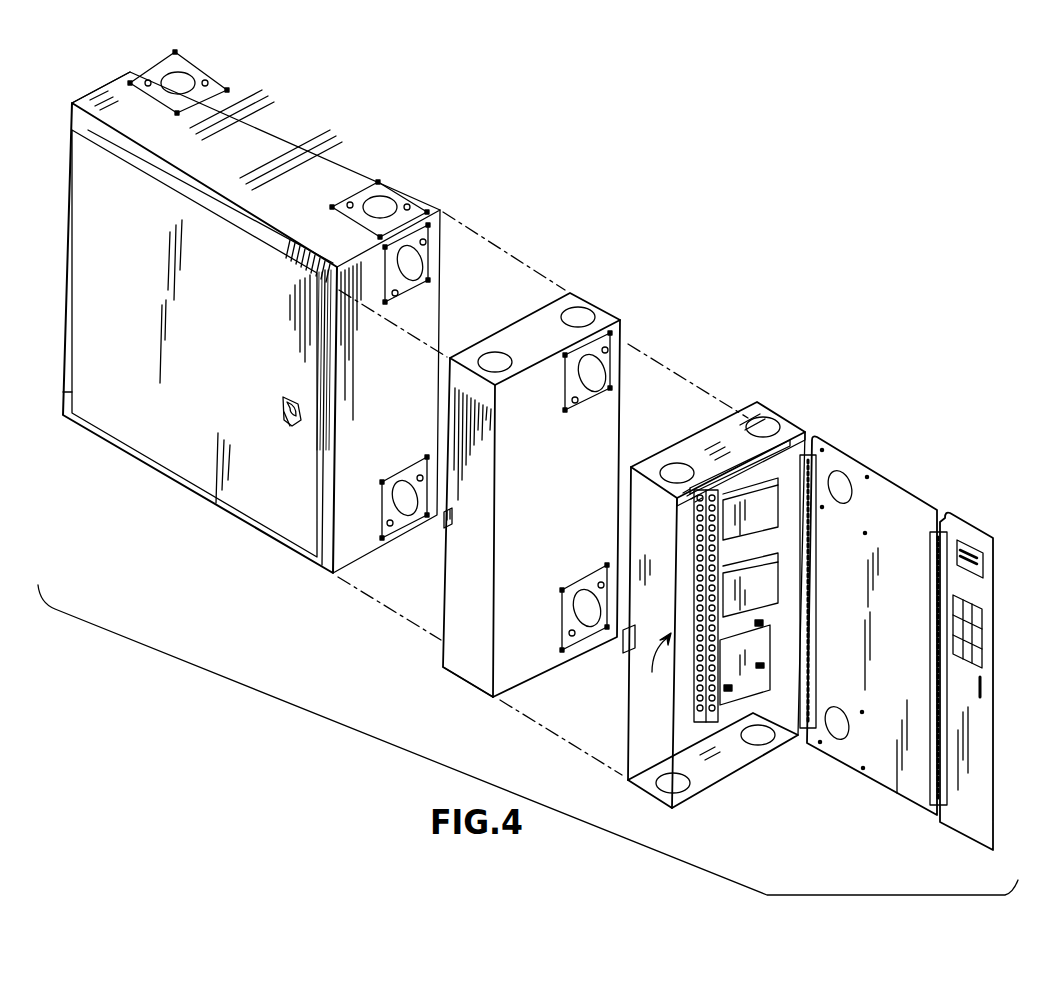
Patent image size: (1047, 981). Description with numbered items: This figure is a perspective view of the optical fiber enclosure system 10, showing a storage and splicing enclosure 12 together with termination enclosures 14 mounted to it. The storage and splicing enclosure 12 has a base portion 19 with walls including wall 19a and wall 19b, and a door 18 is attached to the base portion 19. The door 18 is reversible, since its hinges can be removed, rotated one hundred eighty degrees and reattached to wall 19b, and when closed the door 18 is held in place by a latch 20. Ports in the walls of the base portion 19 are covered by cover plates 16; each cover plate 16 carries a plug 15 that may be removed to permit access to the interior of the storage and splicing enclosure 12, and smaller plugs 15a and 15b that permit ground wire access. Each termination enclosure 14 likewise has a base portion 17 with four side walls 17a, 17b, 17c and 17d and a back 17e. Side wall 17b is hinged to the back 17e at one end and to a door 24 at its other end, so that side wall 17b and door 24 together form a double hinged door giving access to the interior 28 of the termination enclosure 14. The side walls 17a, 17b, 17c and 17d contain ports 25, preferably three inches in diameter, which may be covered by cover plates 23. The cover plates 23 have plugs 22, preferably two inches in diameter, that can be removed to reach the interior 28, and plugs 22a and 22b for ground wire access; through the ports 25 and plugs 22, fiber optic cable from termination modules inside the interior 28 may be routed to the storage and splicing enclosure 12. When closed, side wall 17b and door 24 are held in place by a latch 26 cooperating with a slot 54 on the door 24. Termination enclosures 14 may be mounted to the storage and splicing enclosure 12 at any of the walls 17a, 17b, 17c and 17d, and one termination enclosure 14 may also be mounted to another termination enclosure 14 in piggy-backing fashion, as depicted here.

The optical fiber enclosure system 10 is at (692, 257).
The storage and splicing enclosure 12 is at (302, 128).
The termination enclosure 14 is at (599, 306).
The plugs 15 is at (182, 80).
The plug 15a is at (209, 84).
The plug 15b is at (149, 80).
The cover plates 16 is at (205, 70).
The base portion 17 is at (551, 292).
The side wall 17a is at (546, 352).
The side wall 17b is at (571, 497).
The side wall 17c is at (734, 764).
The side wall 17d is at (681, 581).
The back 17e is at (797, 696).
The door 18 is at (317, 557).
The base portion 19 is at (92, 102).
The wall 19a is at (268, 182).
The wall 19b is at (364, 379).
The latch 20 is at (288, 400).
The plugs 22 is at (596, 376).
The plug 22a is at (608, 349).
The plug 22b is at (578, 403).
The cover plates 23 is at (612, 361).
The door 24 is at (488, 652).
The ports 25 is at (494, 356).
The latch 26 is at (445, 524).
The interior 28 is at (652, 665).
The slot 54 is at (982, 684).